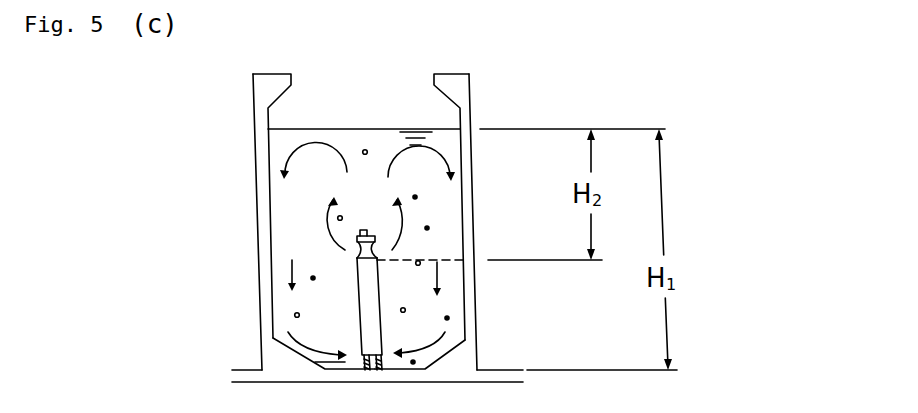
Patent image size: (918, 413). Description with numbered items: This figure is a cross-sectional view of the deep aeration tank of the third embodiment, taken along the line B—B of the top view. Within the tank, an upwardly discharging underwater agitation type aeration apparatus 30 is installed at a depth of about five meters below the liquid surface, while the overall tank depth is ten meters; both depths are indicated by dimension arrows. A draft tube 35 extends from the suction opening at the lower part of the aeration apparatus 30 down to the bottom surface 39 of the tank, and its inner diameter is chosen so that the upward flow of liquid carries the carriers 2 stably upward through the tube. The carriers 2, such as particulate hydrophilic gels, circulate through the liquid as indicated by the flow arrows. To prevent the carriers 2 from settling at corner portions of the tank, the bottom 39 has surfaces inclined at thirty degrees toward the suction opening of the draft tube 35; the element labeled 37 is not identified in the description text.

The carriers 2 is at (292, 225).
The underwater agitation type aeration apparatus 30 is at (377, 242).
The draft tube 35 is at (377, 290).
The inclined bottom wall 37 is at (458, 359).
The bottom surface 39 is at (292, 367).